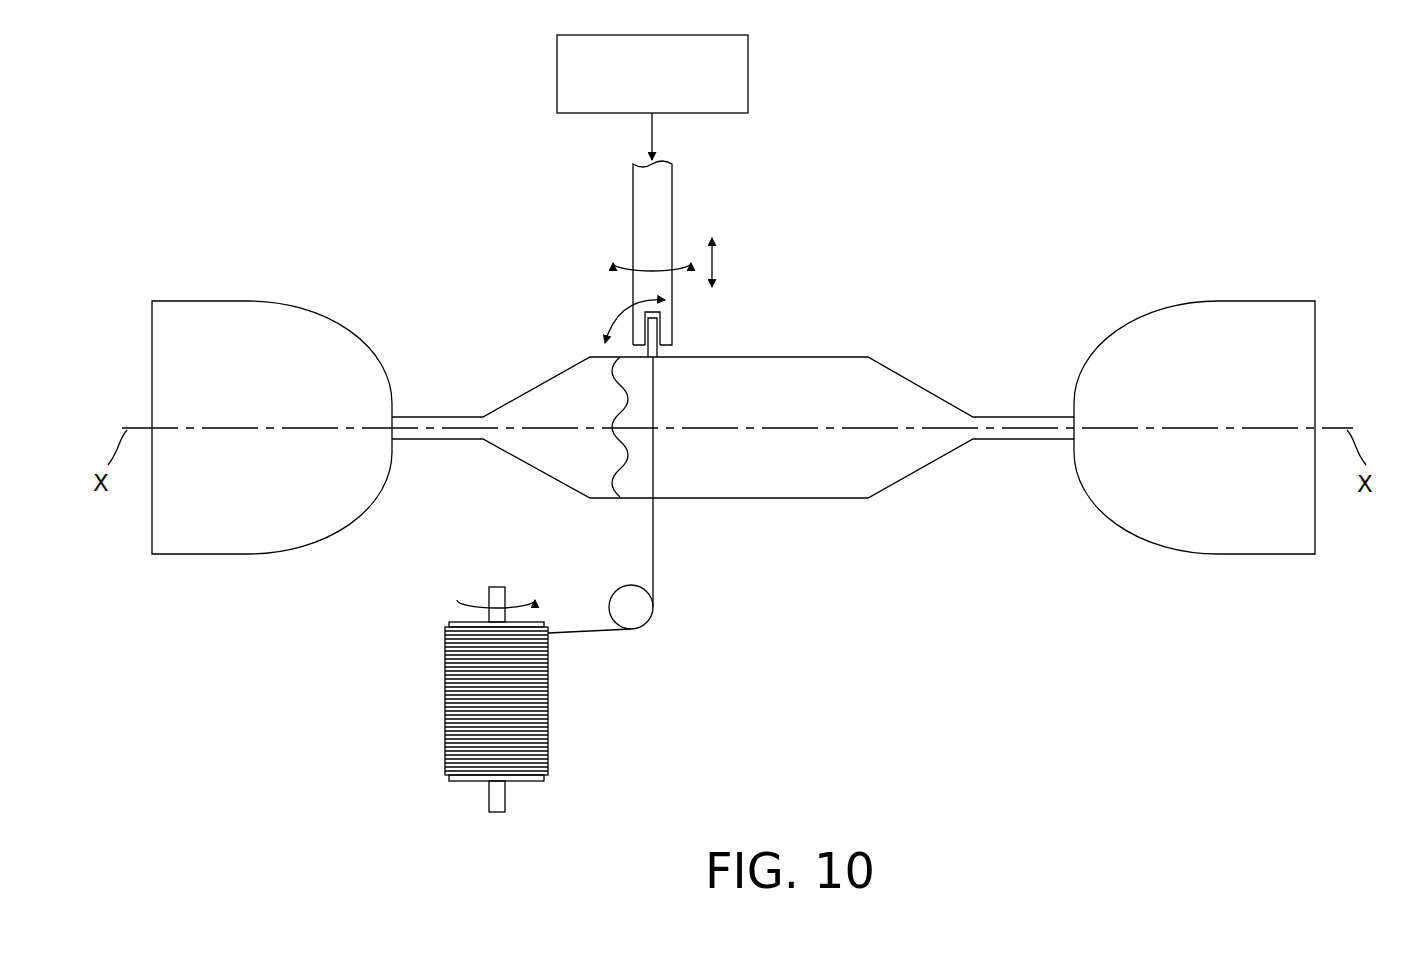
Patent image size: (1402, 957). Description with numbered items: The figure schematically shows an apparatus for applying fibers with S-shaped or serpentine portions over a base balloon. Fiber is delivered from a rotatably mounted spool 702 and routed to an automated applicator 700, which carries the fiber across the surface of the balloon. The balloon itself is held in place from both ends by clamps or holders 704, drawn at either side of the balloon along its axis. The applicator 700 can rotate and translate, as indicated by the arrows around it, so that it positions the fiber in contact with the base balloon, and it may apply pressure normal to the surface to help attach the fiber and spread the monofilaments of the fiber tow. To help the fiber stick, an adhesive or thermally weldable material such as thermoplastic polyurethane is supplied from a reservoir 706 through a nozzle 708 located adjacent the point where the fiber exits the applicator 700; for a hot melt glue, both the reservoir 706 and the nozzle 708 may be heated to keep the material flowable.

The automated applicator 700 is at (672, 187).
The spool 702 is at (542, 707).
The clamps or holders 704 is at (197, 537).
The reservoir 706 is at (748, 73).
The nozzle 708 is at (653, 325).